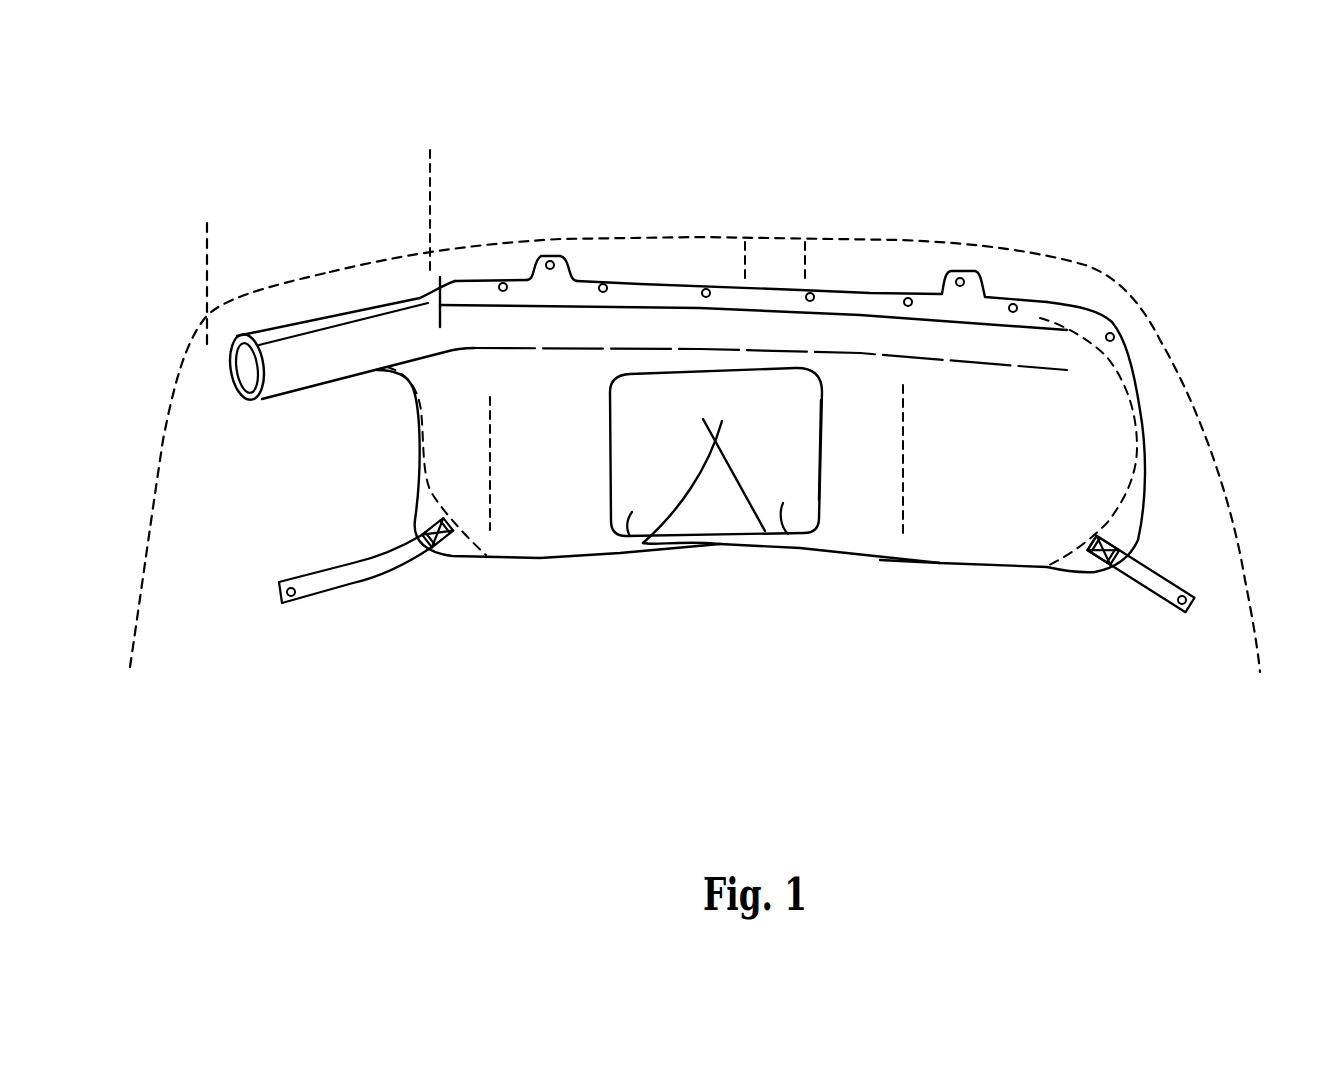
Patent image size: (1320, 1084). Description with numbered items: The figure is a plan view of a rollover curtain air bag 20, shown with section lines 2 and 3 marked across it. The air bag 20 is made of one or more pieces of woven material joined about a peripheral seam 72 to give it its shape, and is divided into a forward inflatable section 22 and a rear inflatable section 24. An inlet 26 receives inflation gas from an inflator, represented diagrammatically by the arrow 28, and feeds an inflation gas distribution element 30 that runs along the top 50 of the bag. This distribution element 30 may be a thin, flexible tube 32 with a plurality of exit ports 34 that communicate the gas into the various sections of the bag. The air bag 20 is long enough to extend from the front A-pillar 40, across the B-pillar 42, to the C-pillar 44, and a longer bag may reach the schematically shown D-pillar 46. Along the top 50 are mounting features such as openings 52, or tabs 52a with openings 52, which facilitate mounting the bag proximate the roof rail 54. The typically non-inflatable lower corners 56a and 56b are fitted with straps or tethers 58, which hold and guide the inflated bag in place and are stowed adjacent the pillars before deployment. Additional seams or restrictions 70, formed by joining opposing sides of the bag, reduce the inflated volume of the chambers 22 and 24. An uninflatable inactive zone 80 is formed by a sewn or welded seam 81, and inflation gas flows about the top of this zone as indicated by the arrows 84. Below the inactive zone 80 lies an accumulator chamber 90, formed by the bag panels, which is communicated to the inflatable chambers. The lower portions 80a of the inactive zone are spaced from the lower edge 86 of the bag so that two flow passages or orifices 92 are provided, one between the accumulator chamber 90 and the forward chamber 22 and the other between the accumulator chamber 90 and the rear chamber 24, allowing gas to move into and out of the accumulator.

The section line 2- 2 is at (597, 63).
The section line 3- 3 is at (627, 227).
The rollover air bag 20 is at (390, 276).
The forward inflatable section 22 is at (977, 520).
The rear inflatable section 24 is at (555, 513).
The inlet 26 is at (290, 387).
The inflator 28 is at (229, 383).
The inflation gas distribution element 30 is at (467, 296).
The thin flexible tube 32 is at (441, 277).
The exit ports 34 is at (467, 350).
The A-pillar 40 is at (1180, 437).
The B-pillar 42 is at (780, 247).
The C-pillar 44 is at (434, 195).
The D-pillar 46 is at (230, 420).
The top of the air bag 50 is at (872, 300).
The openings 52 is at (556, 259).
The tabs 52a is at (552, 255).
The roof rail 54 is at (687, 247).
The lower corner 56a is at (1083, 556).
The lower corner 56b is at (450, 550).
The straps or tethers 58 is at (327, 583).
The seam 70 is at (490, 438).
The peripheral seam 72 is at (432, 491).
The inactive zone 80 is at (810, 416).
The lower portions of the inactive zone 80a is at (711, 506).
The seam 81 is at (823, 464).
The arrows 84 is at (610, 358).
The lower edge 86 is at (897, 563).
The accumulator chamber 90 is at (721, 500).
The flow passage or orifice 92 is at (668, 531).